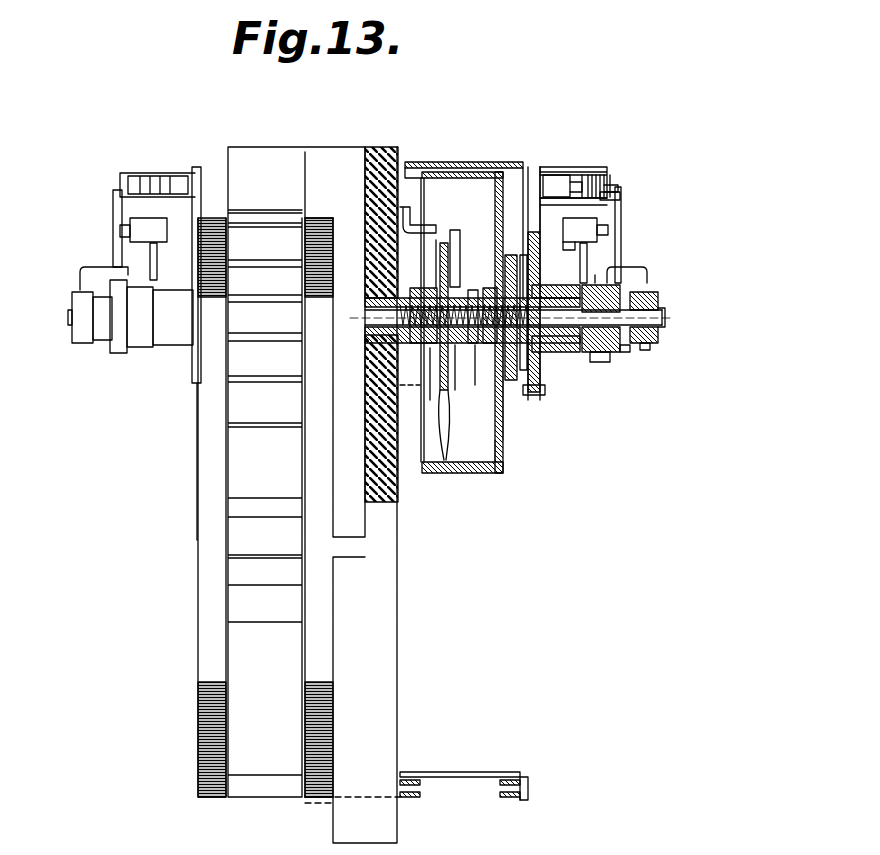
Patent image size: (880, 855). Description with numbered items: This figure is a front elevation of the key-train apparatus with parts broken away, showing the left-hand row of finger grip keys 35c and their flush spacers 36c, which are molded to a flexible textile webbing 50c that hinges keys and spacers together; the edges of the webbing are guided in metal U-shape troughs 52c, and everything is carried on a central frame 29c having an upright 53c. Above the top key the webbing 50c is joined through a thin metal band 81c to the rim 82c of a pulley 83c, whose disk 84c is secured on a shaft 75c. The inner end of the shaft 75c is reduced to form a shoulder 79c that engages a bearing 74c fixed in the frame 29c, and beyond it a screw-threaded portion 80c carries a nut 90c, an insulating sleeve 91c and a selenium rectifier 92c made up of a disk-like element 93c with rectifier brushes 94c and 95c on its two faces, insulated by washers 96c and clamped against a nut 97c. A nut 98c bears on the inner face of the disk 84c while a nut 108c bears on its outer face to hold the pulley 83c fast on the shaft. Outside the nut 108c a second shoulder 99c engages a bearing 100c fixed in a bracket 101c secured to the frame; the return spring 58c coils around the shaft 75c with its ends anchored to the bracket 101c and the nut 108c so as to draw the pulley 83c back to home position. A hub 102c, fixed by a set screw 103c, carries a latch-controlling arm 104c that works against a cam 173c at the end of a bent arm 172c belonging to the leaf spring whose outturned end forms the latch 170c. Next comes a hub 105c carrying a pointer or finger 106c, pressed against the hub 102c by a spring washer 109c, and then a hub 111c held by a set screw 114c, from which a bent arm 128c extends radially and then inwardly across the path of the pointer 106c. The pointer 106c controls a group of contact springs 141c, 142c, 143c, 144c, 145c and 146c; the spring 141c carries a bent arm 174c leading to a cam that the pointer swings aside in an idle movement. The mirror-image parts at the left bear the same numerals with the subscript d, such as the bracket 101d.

The bracket 101d is at (196, 165).
The textile webbing 50c is at (410, 160).
The thin metal band 81c is at (452, 171).
The bracket 101c is at (535, 170).
The contact spring 144c is at (553, 175).
The contact spring 143c is at (585, 175).
The contact spring 142c is at (598, 175).
The contact spring 141c is at (612, 174).
The contact spring 146c is at (618, 185).
The contact spring 145c is at (620, 190).
The bent arm 174c is at (622, 195).
The rectifier brush 94c is at (443, 243).
The rectifier brush 95c is at (440, 235).
The selenium rectifier 92c is at (460, 265).
The insulating washers 96c is at (472, 290).
The bent arm 172c is at (573, 207).
The cam 173c is at (562, 256).
The shoulder 99c is at (556, 314).
The pointer 106c is at (115, 255).
The latch 170c is at (598, 231).
The latch-controlling arm 104c is at (583, 262).
The hub 102c is at (630, 264).
The hub 105c is at (612, 285).
The spring washer 109c is at (630, 292).
The bent arm 128c is at (640, 298).
The shaft 75c is at (668, 315).
The hub 111c is at (640, 328).
The set screw 114c is at (652, 346).
The bearing 100c is at (632, 352).
The set screw 103c is at (605, 356).
The spring 58c is at (546, 388).
The nut 108c is at (516, 383).
The nut 98c is at (478, 385).
The nut 97c is at (452, 385).
The disk-like element 93c is at (446, 395).
The nut 90c is at (438, 400).
The shoulder 79c is at (409, 398).
The pulley 83c is at (506, 432).
The rim 82c is at (499, 450).
The disk 84c is at (504, 445).
The bearing 74c is at (366, 300).
The screw-threaded portion 80c is at (375, 340).
The insulating sleeve 91c is at (464, 315).
The finger grip keys 35c is at (240, 407).
The flush spacers 36c is at (233, 453).
The central frame 29c is at (400, 580).
The upright 53c is at (500, 772).
The U-shape troughs 52c is at (512, 797).